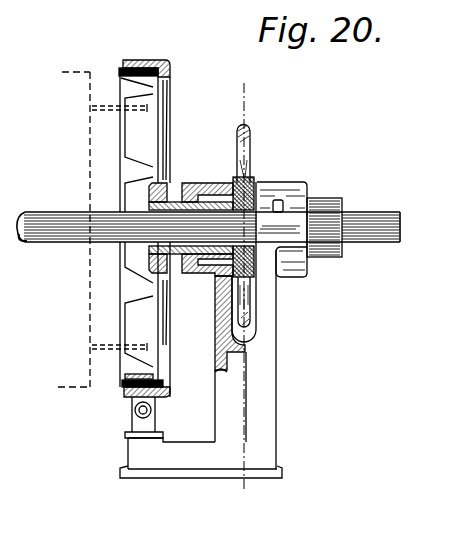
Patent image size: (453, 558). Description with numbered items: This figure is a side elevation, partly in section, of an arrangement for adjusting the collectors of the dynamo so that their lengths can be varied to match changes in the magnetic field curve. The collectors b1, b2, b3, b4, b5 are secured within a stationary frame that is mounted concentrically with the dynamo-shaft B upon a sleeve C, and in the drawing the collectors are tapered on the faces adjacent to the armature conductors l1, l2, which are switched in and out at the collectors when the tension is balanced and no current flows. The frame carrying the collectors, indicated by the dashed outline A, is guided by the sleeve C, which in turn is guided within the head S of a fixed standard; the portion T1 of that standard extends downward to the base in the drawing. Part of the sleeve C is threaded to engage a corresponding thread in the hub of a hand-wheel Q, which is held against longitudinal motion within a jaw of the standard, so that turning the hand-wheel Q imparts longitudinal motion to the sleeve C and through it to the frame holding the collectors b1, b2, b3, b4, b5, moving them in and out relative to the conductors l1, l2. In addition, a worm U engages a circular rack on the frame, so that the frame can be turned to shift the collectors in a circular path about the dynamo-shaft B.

The frame A is at (88, 78).
The dynamo-shaft B is at (60, 238).
The sleeve C is at (180, 183).
The hand-wheel Q is at (248, 164).
The head S is at (299, 187).
The arm T1 is at (258, 345).
The worm U is at (136, 409).
The collector b1 is at (123, 79).
The collector b2 is at (140, 137).
The drum member b3 is at (140, 197).
The drum member b4 is at (138, 319).
The drum member b5 is at (128, 376).
The conductor l1 is at (96, 113).
The conductor l2 is at (96, 347).